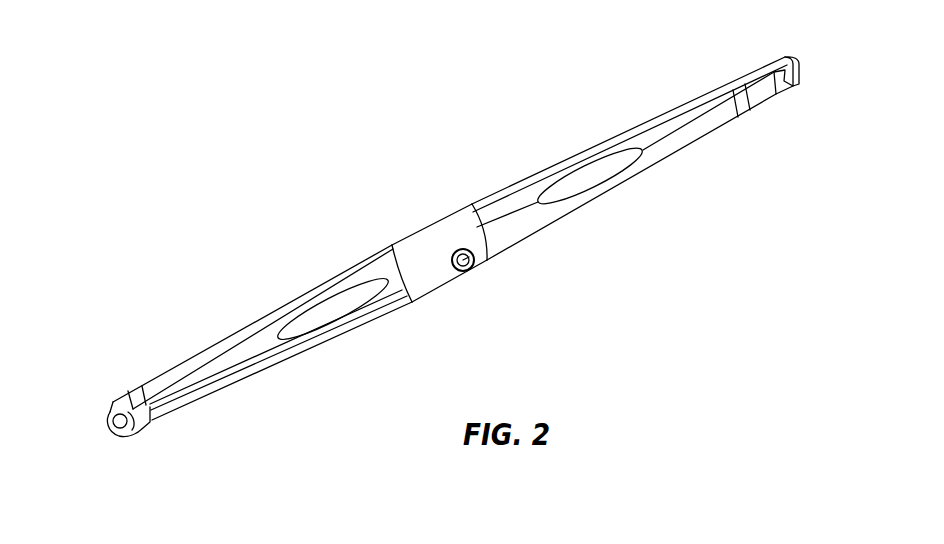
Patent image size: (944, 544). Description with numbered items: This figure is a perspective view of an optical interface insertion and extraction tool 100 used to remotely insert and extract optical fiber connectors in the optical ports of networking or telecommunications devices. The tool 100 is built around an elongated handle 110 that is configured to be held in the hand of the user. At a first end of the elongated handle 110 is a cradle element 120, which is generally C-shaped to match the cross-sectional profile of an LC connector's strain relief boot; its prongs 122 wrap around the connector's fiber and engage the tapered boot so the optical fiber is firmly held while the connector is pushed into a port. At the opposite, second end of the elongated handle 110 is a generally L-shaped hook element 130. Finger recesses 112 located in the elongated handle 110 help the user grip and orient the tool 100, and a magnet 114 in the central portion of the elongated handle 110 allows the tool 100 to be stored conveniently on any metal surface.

The tool 100 is at (371, 111).
The elongated handle 110 is at (518, 181).
The finger recess 112 is at (603, 166).
The magnet 114 is at (475, 262).
The cradle element 120 is at (113, 401).
The prongs 122 is at (129, 435).
The hook element 130 is at (788, 55).